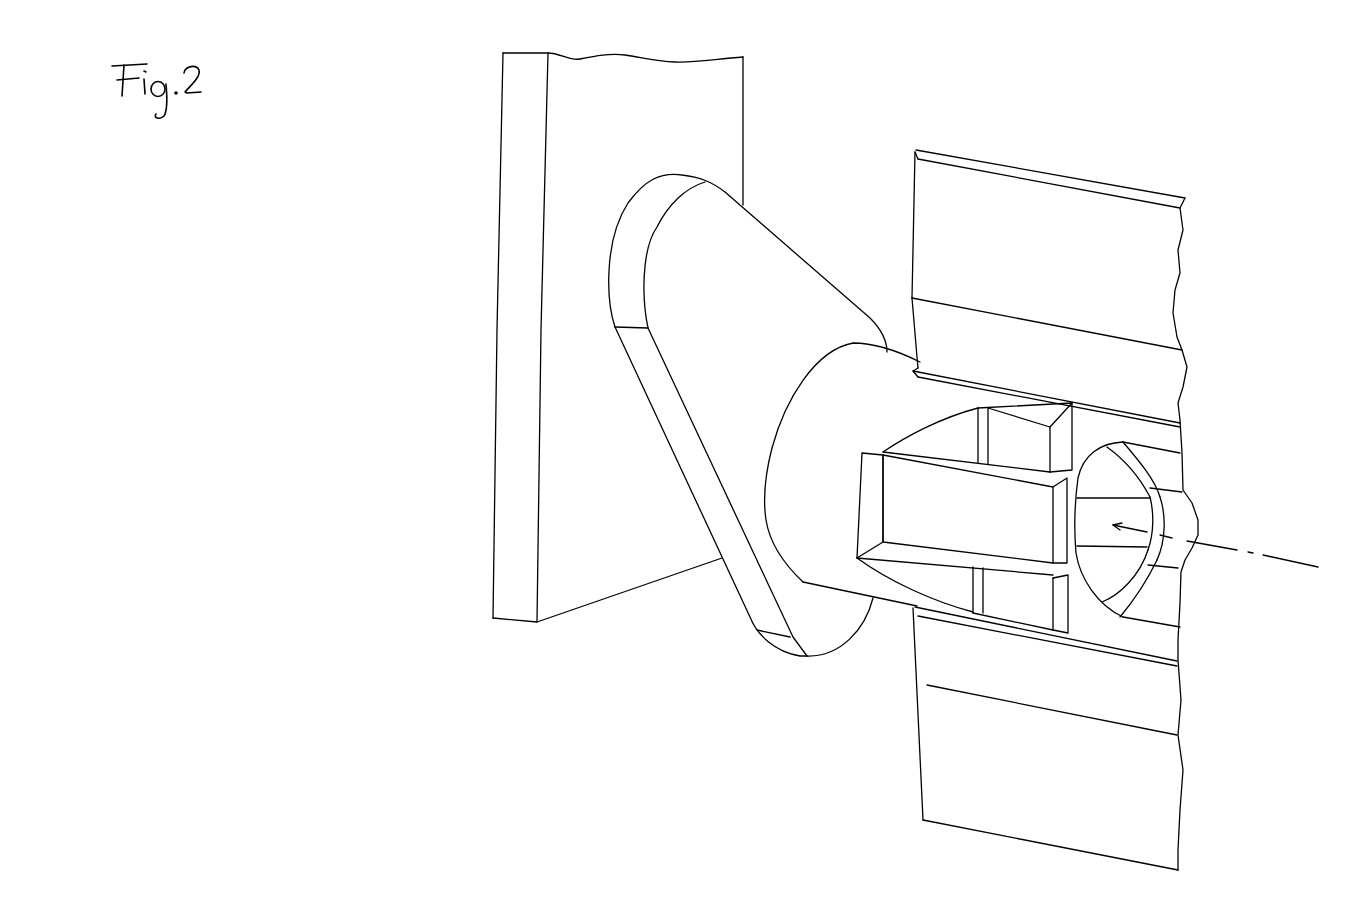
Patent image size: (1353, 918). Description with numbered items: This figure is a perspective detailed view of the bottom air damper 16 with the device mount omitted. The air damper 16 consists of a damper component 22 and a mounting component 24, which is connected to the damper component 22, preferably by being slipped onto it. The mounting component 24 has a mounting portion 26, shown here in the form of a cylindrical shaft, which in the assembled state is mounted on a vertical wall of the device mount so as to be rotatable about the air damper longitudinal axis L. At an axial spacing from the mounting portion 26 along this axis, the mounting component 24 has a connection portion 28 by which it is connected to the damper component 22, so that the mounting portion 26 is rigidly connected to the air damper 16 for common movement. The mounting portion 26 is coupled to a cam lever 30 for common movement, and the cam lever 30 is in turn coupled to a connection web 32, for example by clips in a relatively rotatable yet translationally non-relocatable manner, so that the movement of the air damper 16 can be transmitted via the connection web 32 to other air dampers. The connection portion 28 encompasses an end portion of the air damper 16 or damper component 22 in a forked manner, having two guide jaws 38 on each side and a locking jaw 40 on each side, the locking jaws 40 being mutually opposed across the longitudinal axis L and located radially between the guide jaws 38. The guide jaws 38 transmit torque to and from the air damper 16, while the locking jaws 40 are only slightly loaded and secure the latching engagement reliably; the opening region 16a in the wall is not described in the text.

The air damper 16 is at (1153, 278).
The opening in the wall 16a is at (983, 657).
The damper component 22 is at (1073, 210).
The mounting component 24 is at (948, 357).
The mounting portion 26 is at (815, 507).
The connection portion 28 is at (957, 627).
The cam lever 30 is at (753, 255).
The connection web 32 is at (567, 588).
The guide jaw 38 is at (1028, 433).
The locking jaw 40 is at (980, 534).
The air damper longitudinal axis L is at (1283, 560).